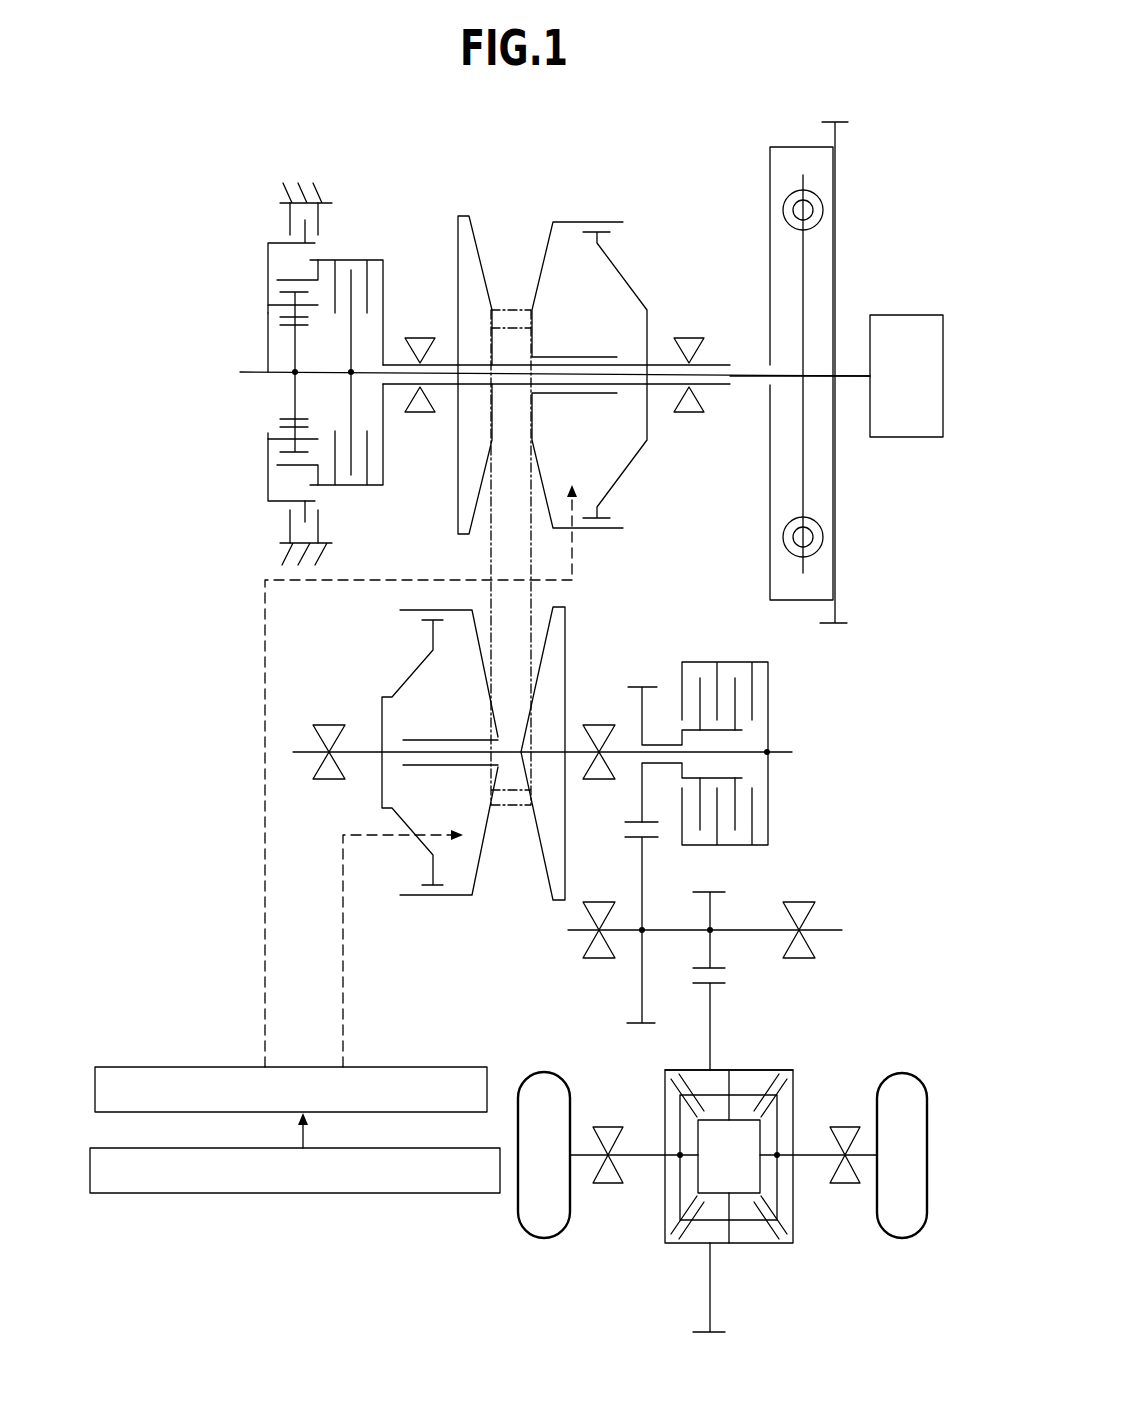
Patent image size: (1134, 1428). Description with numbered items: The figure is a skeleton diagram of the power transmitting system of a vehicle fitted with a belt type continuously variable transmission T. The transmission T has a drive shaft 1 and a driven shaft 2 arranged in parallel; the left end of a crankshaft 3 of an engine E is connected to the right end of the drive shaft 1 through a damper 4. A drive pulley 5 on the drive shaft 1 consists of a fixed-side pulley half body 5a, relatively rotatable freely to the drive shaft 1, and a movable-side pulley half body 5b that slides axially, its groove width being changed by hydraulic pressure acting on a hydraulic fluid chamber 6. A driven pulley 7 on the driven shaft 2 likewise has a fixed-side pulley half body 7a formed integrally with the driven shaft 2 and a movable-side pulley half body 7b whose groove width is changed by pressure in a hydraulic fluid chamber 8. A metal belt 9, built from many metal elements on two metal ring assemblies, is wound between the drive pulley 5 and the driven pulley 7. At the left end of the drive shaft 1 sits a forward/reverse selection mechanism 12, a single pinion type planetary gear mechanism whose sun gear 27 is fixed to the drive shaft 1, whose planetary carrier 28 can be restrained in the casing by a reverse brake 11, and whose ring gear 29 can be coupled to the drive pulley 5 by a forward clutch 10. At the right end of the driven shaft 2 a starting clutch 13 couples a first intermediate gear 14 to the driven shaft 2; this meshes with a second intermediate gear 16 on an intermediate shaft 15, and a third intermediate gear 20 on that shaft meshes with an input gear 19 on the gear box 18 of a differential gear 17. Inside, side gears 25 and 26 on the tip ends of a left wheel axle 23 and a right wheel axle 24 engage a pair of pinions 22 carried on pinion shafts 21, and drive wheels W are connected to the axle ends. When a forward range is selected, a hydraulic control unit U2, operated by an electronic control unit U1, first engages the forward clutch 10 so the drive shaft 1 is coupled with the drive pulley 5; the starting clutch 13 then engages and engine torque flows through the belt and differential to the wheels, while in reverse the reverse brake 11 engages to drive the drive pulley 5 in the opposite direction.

The drive shaft 1 is at (660, 373).
The driven shaft 2 is at (627, 752).
The crankshaft 3 is at (852, 378).
The damper 4 is at (848, 231).
The drive pulley 5 is at (540, 325).
The fixed-side pulley half body 5a is at (480, 247).
The movable-side pulley half body 5b is at (575, 343).
The hydraulic fluid chamber 6 is at (589, 321).
The driven pulley 7 is at (482, 800).
The fixed-side pulley half body 7a is at (545, 863).
The movable-side pulley half body 7b is at (478, 870).
The hydraulic fluid chamber 8 is at (444, 711).
The metal belt 9 is at (488, 558).
The forward clutch 10 is at (350, 500).
The reverse brake 11 is at (283, 526).
The forward/reverse selection mechanism 12 is at (292, 374).
The starting clutch 13 is at (714, 651).
The first intermediate gear 14 is at (648, 684).
The intermediate shaft 15 is at (670, 928).
The second intermediate gear 16 is at (630, 1025).
The differential gear 17 is at (729, 1141).
The gear box 18 is at (742, 1068).
The input gear 19 is at (720, 983).
The third intermediate gear 20 is at (717, 892).
The pinion shaft 21 is at (731, 1083).
The pinion 22 is at (684, 1075).
The left wheel axle 23 is at (635, 1158).
The right wheel axle 24 is at (817, 1158).
The side gear 25 is at (672, 1093).
The side gear 26 is at (793, 1093).
The sun gear 27 is at (282, 328).
The planetary carrier 28 is at (268, 475).
The ring gear 29 is at (287, 280).
The engine E is at (898, 390).
The belt type continuously variable transmission T is at (612, 580).
The drive wheel W is at (518, 1210).
The electronic control unit U1 is at (175, 1195).
The hydraulic control unit U2 is at (177, 1066).